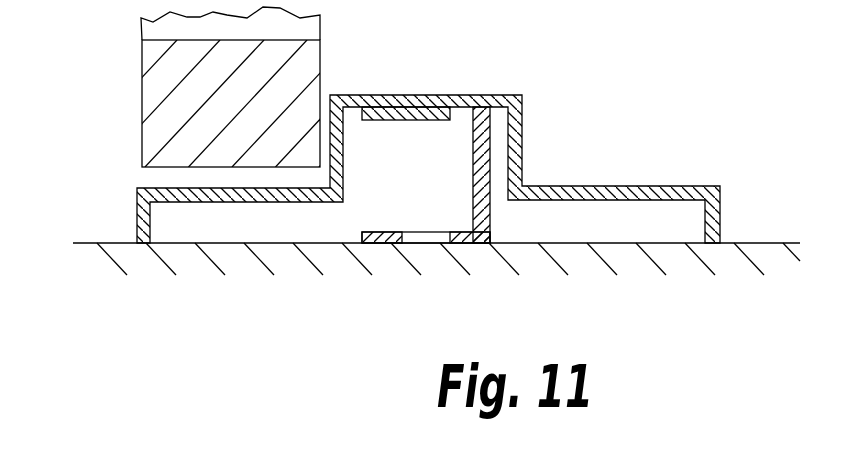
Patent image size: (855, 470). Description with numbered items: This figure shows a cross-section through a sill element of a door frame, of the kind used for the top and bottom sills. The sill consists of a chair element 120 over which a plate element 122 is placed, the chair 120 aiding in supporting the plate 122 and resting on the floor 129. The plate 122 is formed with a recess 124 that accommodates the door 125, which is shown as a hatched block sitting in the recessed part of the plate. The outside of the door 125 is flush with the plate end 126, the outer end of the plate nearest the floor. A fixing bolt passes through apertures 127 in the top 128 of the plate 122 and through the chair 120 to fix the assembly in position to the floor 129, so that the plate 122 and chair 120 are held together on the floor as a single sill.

The chair element 120 is at (482, 185).
The plate element 122 is at (630, 186).
The recess 124 is at (323, 173).
The door 125 is at (173, 82).
The plate end 126 is at (137, 207).
The apertures 127 is at (408, 104).
The top of the plate 128 is at (505, 94).
The floor 129 is at (628, 252).